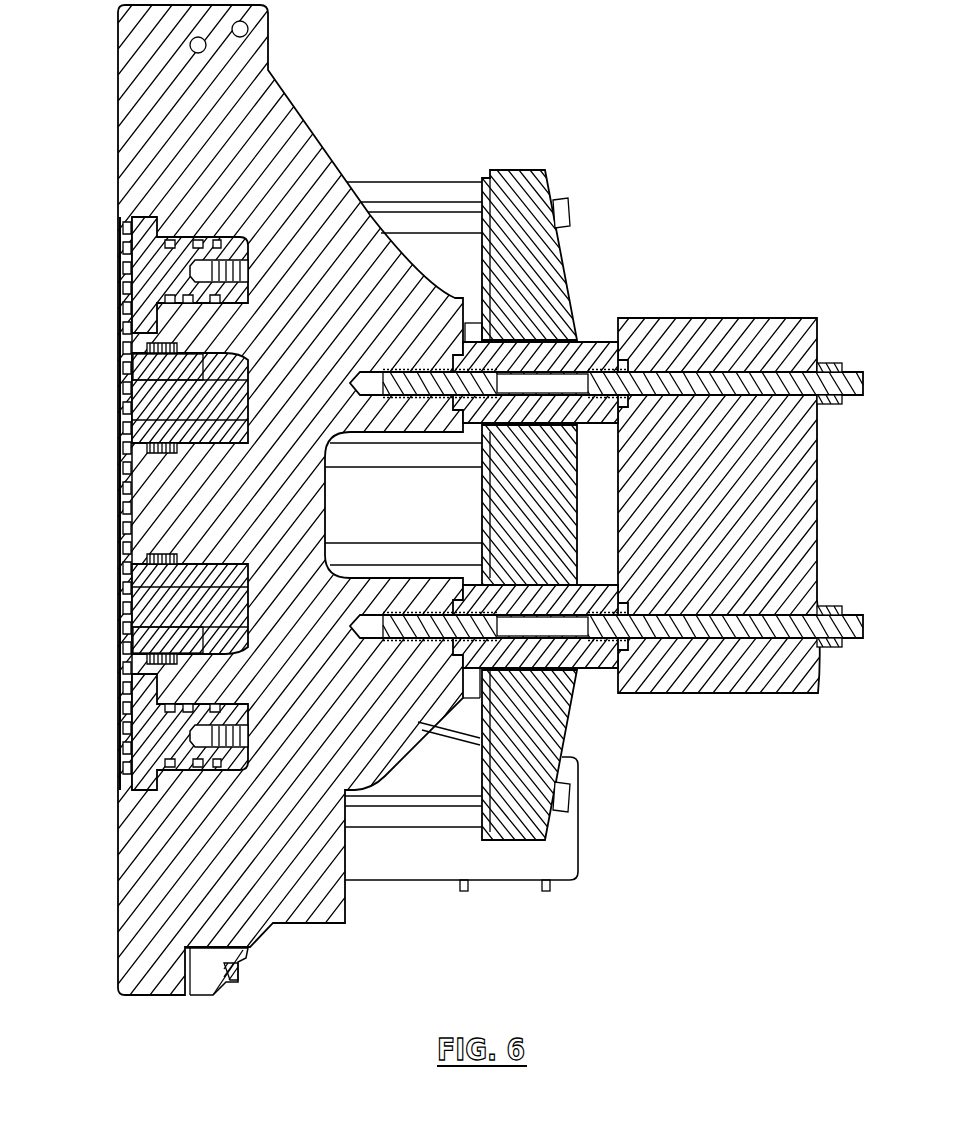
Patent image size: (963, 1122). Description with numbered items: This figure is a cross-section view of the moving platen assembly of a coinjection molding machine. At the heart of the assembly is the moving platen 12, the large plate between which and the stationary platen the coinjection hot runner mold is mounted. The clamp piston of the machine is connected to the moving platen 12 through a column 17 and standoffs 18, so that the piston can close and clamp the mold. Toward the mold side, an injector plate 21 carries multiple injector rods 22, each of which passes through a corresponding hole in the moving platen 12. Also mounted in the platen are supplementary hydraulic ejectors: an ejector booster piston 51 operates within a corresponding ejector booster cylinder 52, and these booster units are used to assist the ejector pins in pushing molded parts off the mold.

The moving platen 12 is at (272, 118).
The column 17 is at (743, 340).
The standoffs 18 is at (597, 357).
The injector plate 21 is at (515, 190).
The injector rods 22 is at (423, 190).
The ejector booster piston 51 is at (158, 403).
The ejector booster cylinder 52 is at (150, 363).